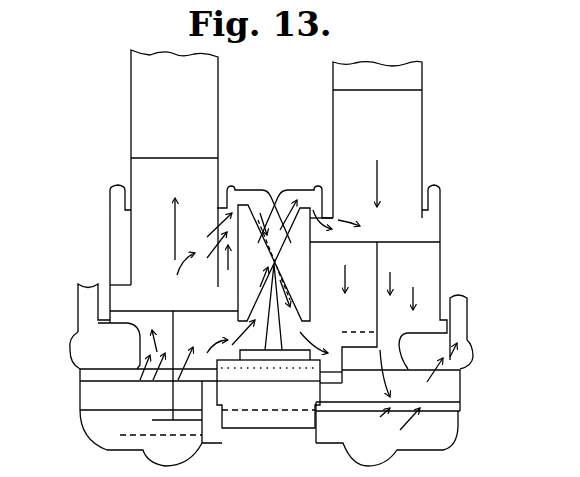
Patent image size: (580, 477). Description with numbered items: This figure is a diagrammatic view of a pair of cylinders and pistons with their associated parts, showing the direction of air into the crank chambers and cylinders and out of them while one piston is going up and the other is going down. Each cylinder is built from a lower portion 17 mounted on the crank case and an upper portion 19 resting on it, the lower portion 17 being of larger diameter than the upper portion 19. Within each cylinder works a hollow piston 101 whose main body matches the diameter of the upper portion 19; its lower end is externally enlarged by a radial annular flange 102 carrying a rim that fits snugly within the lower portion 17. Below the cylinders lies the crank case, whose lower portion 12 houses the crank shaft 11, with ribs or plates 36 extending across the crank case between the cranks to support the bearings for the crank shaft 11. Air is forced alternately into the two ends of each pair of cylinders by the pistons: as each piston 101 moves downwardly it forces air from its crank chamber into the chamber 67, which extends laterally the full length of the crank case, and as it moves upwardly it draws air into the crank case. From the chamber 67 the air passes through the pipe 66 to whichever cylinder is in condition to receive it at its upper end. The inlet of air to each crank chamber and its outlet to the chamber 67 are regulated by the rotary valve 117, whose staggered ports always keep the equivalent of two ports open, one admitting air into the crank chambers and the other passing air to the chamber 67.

The upper portion of the cylinder 19 is at (131, 95).
The piston 101 is at (298, 285).
The flange 102 is at (110, 285).
The lower portion of the cylinder 17 is at (391, 300).
The pipe 66 is at (78, 298).
The chamber 67 is at (271, 346).
The rotary valve 117 is at (83, 396).
The lower portion of the crank case 12 is at (100, 437).
The crank shaft 11 is at (268, 383).
The ribs or plates 36 is at (275, 430).